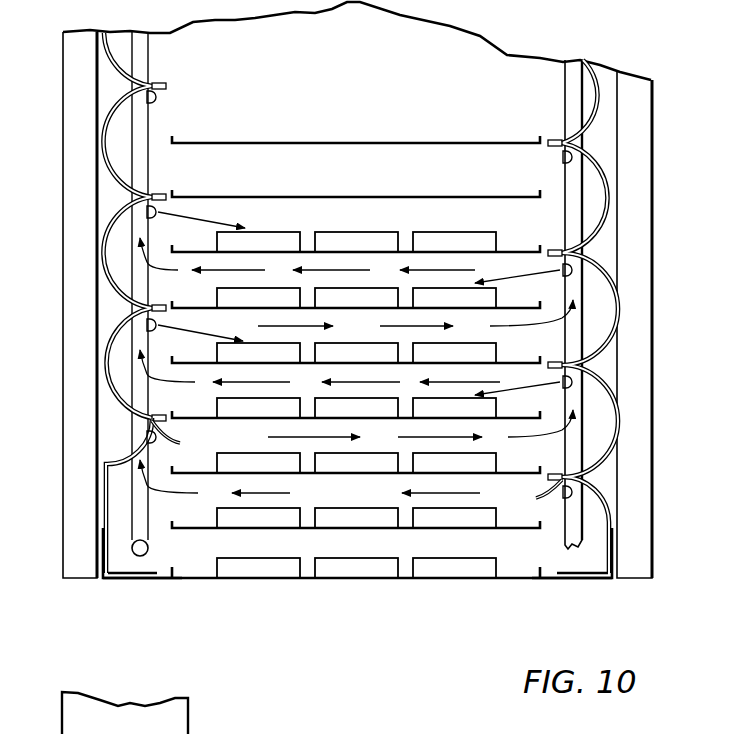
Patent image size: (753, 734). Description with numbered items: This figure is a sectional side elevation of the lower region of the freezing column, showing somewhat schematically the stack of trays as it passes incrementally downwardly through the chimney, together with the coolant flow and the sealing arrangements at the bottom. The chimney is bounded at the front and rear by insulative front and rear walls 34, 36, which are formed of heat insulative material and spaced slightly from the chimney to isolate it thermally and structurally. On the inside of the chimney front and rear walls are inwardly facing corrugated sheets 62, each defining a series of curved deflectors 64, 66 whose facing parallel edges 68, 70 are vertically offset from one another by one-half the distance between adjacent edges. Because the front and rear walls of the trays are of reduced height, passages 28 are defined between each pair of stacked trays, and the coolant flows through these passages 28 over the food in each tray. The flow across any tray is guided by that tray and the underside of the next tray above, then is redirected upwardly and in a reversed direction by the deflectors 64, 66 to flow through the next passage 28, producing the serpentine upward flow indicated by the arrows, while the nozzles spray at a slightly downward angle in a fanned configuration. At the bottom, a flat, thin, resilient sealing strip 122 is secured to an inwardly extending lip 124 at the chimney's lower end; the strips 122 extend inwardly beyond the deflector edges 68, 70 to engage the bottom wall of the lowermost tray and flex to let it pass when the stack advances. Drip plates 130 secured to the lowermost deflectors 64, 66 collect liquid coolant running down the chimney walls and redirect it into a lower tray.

The passages 28 is at (170, 287).
The insulative front wall 34 is at (86, 185).
The insulative rear wall 36 is at (636, 121).
The corrugated sheets 62 is at (112, 296).
The deflector 64 is at (130, 413).
The deflector 66 is at (556, 362).
The deflector edge 68 is at (167, 86).
The deflector edge 70 is at (548, 250).
The sealing strip 122 is at (163, 580).
The inwardly extending lip 124 is at (138, 572).
The drip plate 130 is at (172, 436).